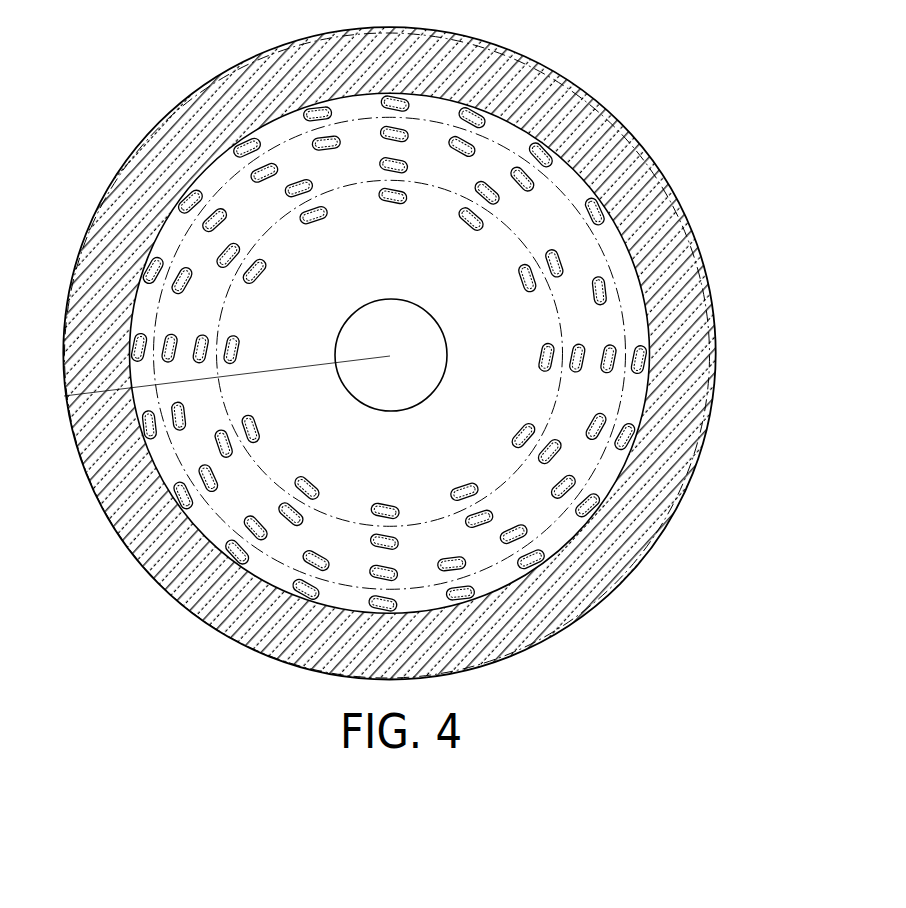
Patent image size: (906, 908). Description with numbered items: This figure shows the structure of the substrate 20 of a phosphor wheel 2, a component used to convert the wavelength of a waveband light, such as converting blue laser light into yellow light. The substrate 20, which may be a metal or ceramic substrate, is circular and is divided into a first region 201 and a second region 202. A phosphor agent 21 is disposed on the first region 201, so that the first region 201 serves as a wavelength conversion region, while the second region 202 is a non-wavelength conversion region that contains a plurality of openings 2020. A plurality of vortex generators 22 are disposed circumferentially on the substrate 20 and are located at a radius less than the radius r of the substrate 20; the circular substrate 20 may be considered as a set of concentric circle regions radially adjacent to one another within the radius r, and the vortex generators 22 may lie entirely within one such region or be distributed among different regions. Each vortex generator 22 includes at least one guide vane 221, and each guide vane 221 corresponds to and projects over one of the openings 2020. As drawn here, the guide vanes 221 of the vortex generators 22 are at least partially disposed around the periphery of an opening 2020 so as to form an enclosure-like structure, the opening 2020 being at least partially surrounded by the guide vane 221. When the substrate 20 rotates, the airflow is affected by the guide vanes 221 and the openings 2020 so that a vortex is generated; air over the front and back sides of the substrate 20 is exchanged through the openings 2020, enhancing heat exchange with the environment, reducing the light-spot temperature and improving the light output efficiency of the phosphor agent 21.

The phosphor wheel 2 is at (422, 366).
The substrate 20 is at (389, 370).
The first region 201 is at (573, 590).
The second region 202 is at (456, 315).
The opening 2020 is at (687, 234).
The phosphor agent 21 is at (406, 666).
The vortex generator 22 is at (652, 536).
The guide vane 221 is at (646, 538).
The radius of the substrate r is at (227, 366).